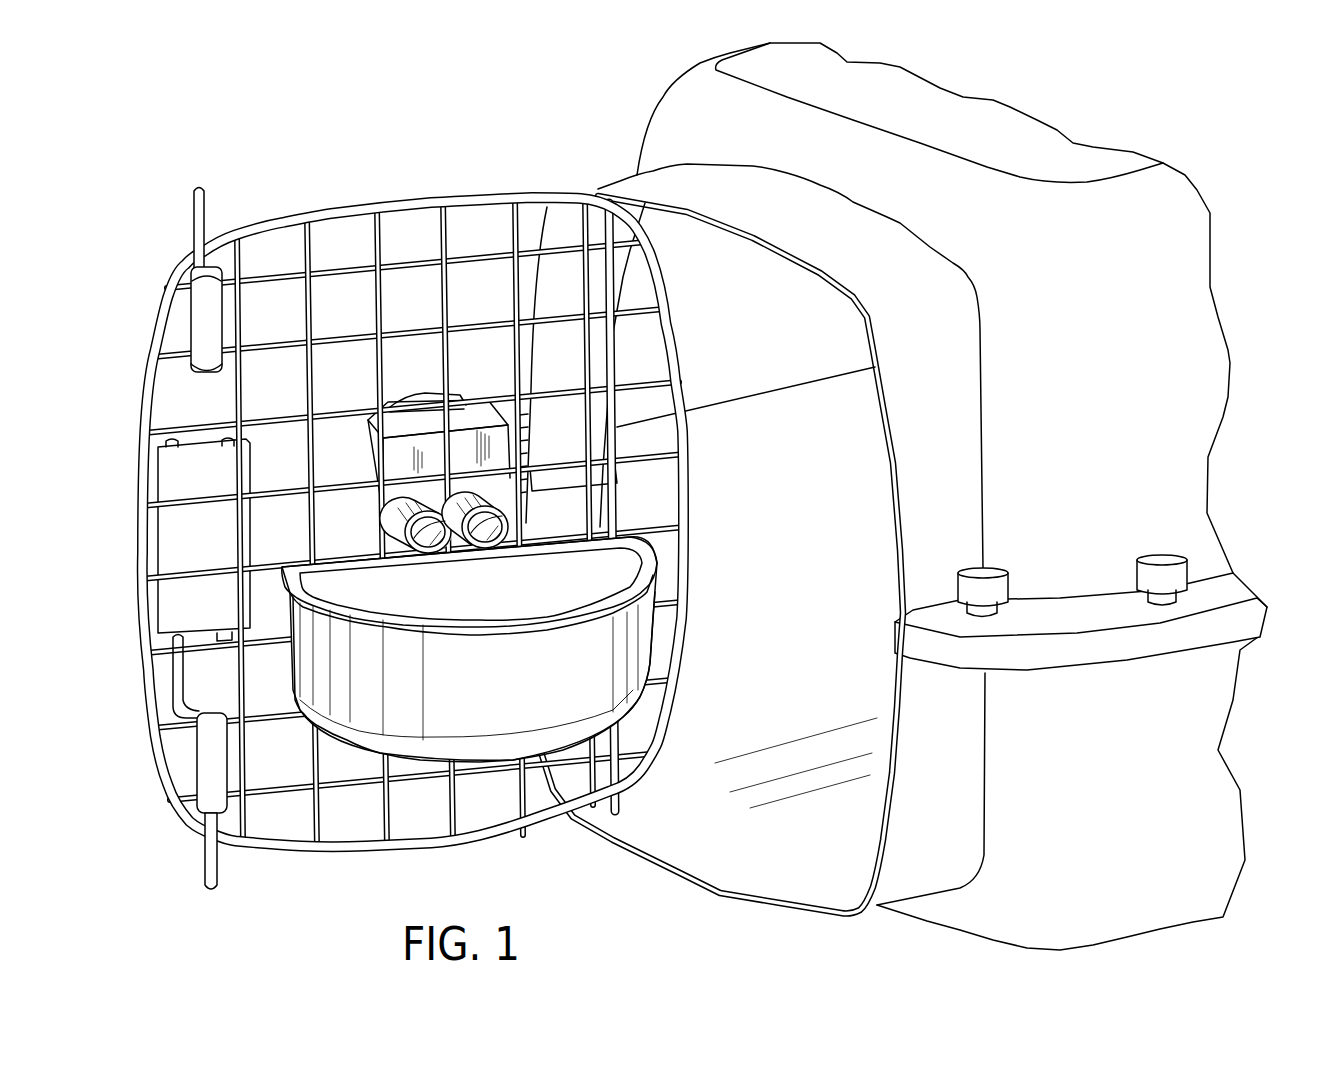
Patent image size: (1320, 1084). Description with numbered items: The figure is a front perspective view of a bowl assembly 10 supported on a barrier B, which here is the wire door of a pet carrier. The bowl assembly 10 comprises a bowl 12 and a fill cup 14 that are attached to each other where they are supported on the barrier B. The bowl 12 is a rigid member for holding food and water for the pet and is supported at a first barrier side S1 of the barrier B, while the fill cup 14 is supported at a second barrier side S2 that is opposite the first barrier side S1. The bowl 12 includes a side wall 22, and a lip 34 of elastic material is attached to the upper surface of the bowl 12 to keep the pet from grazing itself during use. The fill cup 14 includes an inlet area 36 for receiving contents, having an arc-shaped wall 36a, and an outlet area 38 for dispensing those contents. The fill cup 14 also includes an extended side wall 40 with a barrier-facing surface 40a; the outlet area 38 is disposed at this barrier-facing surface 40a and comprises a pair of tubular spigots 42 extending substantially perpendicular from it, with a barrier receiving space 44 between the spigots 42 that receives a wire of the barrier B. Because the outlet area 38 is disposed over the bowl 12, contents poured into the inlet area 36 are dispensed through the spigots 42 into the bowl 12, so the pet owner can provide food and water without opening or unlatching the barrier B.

The bowl assembly 10 is at (636, 509).
The bowl 12 is at (669, 640).
The fill cup 14 is at (390, 380).
The side wall 22 is at (540, 578).
The lip 34 is at (683, 548).
The inlet area 36 is at (461, 408).
The arc-shaped wall 36a is at (415, 400).
The outlet area 38 is at (492, 478).
The extended side wall 40 is at (400, 452).
The barrier-facing surface 40a is at (388, 496).
The spigots 42 is at (483, 548).
The barrier receiving space 44 is at (437, 497).
The barrier B is at (345, 207).
The first barrier side S1 is at (609, 775).
The second barrier side S2 is at (476, 180).